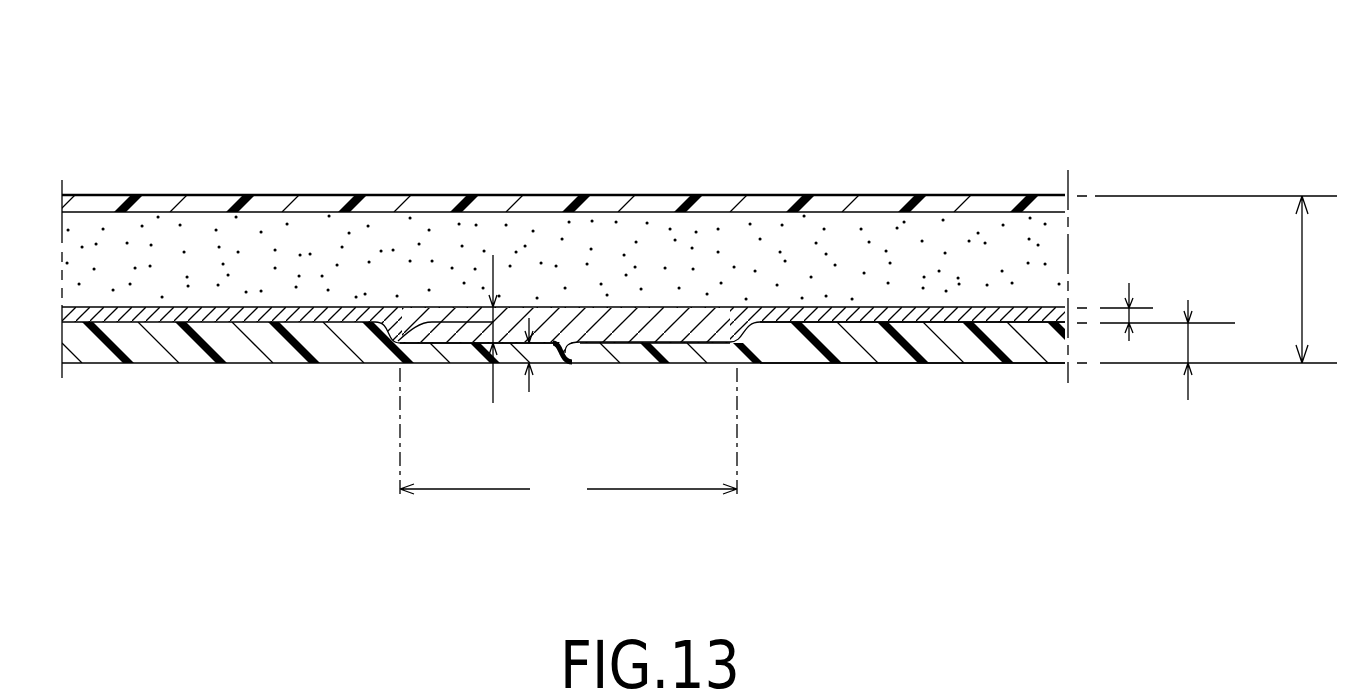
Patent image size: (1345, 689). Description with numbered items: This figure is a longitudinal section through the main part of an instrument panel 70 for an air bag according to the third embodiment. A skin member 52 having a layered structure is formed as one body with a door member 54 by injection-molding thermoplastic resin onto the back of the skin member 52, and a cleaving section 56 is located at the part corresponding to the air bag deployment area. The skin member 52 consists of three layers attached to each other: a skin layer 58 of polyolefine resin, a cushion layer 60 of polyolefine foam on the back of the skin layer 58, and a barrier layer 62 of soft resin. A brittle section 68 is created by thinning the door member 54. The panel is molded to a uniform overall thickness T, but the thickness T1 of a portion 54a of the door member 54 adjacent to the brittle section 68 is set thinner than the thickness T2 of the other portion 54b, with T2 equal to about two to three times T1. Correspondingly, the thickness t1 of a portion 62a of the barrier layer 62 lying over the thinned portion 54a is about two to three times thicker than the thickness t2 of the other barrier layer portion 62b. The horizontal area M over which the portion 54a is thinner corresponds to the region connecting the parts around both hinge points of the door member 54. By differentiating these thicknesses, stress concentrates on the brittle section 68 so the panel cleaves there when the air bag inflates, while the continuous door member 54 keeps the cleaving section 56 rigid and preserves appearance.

The skin member 52 is at (243, 98).
The door member 54 is at (174, 372).
The portion of the door member adjacent to the brittle section 54a is at (638, 364).
The other portion of the door member 54b is at (891, 364).
The cleaving section 56 is at (572, 182).
The skin layer 58 is at (228, 197).
The cushion layer 60 is at (175, 242).
The barrier layer 62 is at (121, 293).
The portion of the barrier layer 62a is at (713, 318).
The other portion of the barrier layer 62b is at (1017, 302).
The brittle section 68 is at (560, 338).
The instrument panel 70 is at (350, 184).
The thickness T is at (1207, 279).
The thickness of the door member portion adjacent to the brittle section T1 is at (555, 364).
The thickness of the other portion of the door member T2 is at (1192, 343).
The thickness of the barrier layer portion t1 is at (380, 332).
The thickness of the other barrier layer portion t2 is at (1137, 316).
The area M is at (568, 439).